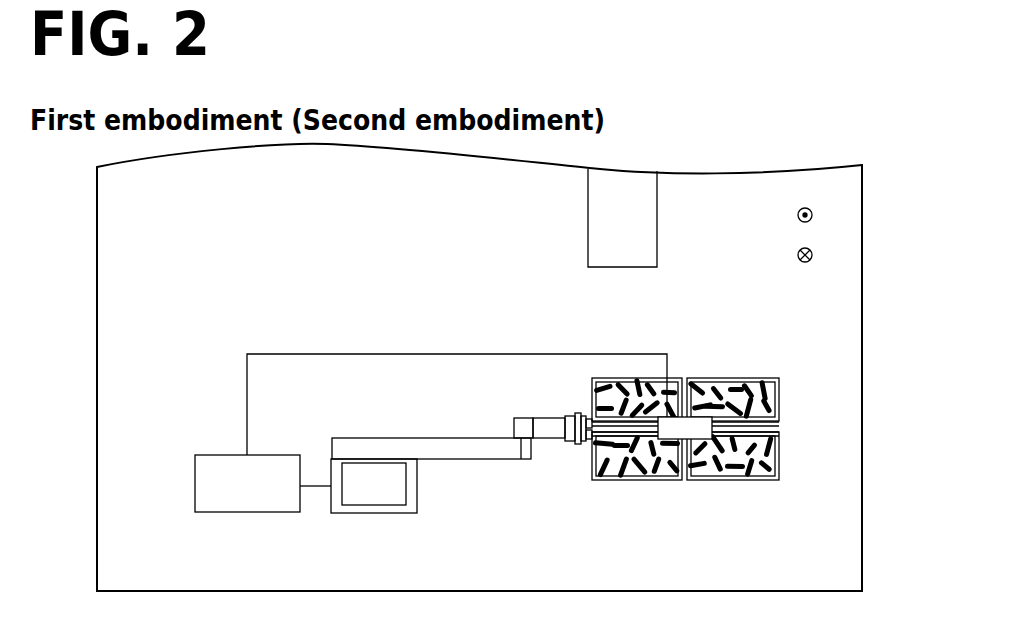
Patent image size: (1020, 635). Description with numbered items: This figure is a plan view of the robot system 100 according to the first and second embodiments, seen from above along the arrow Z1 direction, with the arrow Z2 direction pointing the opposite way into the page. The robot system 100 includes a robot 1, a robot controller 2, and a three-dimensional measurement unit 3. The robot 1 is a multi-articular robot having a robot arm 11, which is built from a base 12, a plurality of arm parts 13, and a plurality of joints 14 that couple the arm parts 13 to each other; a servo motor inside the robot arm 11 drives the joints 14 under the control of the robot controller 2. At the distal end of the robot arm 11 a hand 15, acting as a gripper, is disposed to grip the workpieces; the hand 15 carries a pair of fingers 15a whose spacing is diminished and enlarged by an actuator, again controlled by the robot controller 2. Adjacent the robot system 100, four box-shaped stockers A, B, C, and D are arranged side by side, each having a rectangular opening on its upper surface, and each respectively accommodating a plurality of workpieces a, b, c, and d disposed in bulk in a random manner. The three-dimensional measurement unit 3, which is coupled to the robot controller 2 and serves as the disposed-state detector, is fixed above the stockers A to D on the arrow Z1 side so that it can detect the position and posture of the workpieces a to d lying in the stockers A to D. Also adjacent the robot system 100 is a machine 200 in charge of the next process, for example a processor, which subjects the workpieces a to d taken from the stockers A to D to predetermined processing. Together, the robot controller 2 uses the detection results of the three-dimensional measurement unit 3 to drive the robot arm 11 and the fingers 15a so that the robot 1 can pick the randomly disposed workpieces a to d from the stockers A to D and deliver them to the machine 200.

The robot system 100 is at (225, 302).
The machine in charge of the next process 200 is at (647, 226).
The robot 1 is at (468, 500).
The robot arm 11 is at (480, 447).
The base 12 is at (373, 514).
The arm parts 13 is at (432, 461).
The joints 14 is at (522, 418).
The hand 15 is at (578, 416).
The pair of fingers 15a is at (586, 443).
The robot controller 2 is at (195, 490).
The three-dimensional measurement unit 3 is at (688, 440).
The arrow Z1 direction Z1 is at (822, 216).
The arrow Z2 direction Z2 is at (822, 256).
The workpieces a is at (602, 478).
The stocker A is at (645, 478).
The workpieces b is at (780, 478).
The stocker B is at (732, 478).
The workpieces c is at (600, 385).
The stocker C is at (645, 382).
The workpieces d is at (780, 384).
The stocker D is at (730, 382).